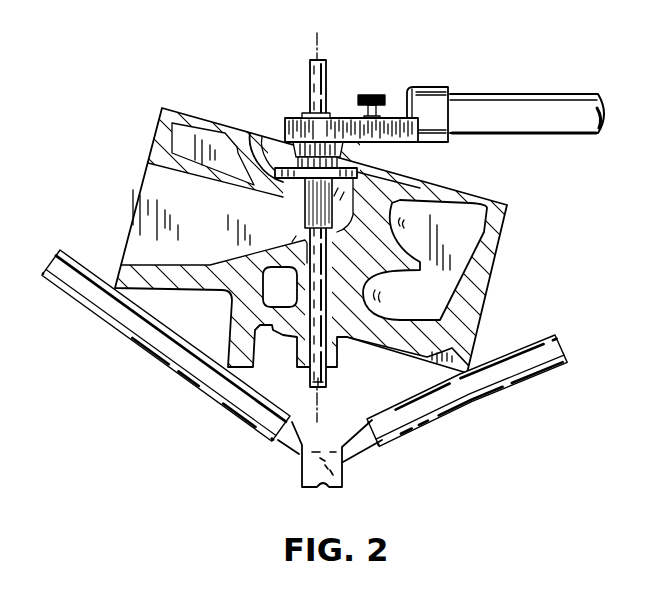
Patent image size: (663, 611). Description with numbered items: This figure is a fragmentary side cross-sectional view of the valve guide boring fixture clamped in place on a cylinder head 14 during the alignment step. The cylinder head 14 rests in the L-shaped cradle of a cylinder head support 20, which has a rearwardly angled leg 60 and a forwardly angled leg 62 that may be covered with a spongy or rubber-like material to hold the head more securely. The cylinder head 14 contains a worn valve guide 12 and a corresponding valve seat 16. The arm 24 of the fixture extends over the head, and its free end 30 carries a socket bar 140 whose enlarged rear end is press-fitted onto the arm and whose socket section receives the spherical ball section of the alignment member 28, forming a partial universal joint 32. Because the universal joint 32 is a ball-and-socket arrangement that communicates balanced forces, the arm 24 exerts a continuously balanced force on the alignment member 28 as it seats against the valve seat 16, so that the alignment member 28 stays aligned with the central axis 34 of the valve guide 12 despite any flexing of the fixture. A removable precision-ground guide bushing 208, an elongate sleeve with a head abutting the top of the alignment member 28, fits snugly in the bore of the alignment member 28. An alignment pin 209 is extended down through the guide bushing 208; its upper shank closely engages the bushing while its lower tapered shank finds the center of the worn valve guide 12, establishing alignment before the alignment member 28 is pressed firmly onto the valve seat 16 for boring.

The valve guide 12 is at (282, 287).
The cylinder head 14 is at (162, 108).
The valve seat 16 is at (378, 176).
The cylinder head support 20 is at (343, 476).
The arm 24 is at (524, 91).
The alignment member 28 is at (251, 132).
The free end 30 is at (485, 93).
The universal joint 32 is at (334, 118).
The central axis 34 is at (318, 46).
The rearwardly angled leg 60 is at (540, 353).
The forwardly angled leg 62 is at (130, 335).
The socket bar 140 is at (433, 86).
The guide bushing 208 is at (307, 215).
The alignment pin 209 is at (311, 75).